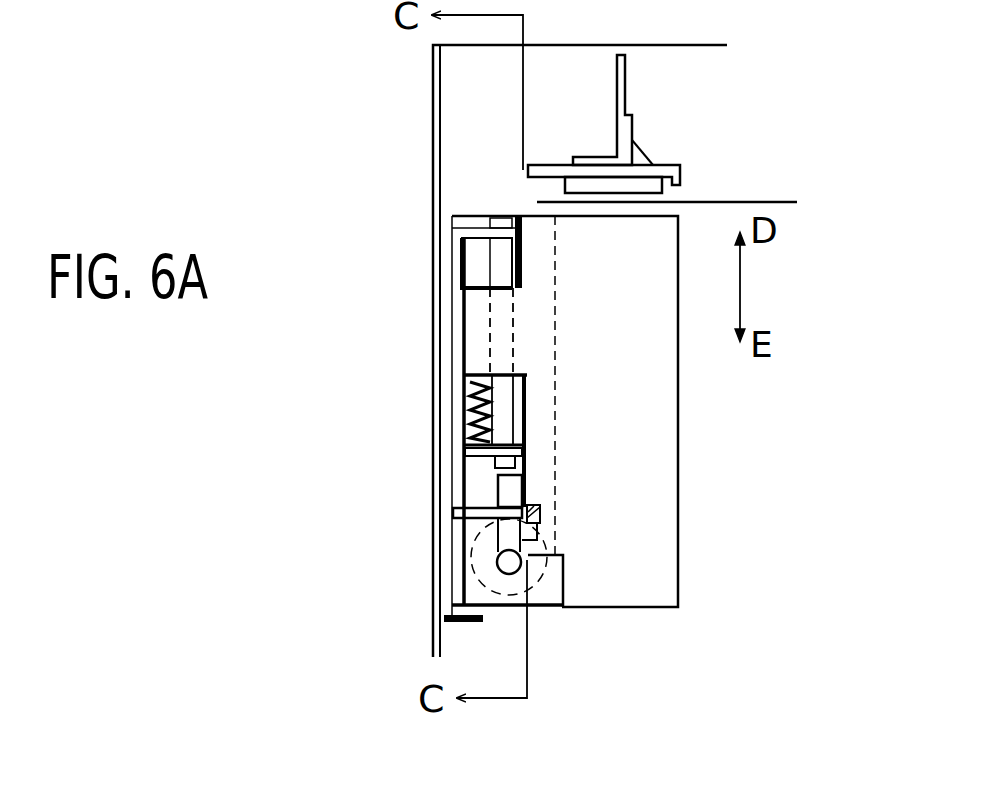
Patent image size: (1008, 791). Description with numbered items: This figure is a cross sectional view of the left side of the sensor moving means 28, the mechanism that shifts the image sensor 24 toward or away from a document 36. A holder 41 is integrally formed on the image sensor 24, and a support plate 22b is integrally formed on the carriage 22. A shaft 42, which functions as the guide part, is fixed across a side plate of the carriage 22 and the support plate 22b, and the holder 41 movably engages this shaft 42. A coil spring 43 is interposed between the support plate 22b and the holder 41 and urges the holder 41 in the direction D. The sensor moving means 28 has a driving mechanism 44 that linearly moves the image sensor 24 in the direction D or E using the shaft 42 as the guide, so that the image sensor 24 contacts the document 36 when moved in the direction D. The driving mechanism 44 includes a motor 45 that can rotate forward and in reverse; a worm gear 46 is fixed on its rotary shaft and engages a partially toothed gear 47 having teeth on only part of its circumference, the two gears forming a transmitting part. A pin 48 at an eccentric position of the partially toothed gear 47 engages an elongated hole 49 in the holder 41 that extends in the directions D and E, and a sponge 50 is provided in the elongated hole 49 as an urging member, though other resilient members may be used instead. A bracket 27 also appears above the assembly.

The carriage 22 is at (543, 612).
The support plate 22b is at (482, 455).
The image sensor 24 is at (690, 583).
The bracket 27 is at (655, 175).
The sensor moving means 28 is at (487, 487).
The document 36 is at (770, 197).
The holder 41 is at (483, 332).
The shaft 42 is at (492, 255).
The coil spring 43 is at (480, 413).
The driving mechanism 44 is at (477, 530).
The motor 45 is at (558, 610).
The worm gear 46 is at (500, 553).
The partially toothed gear 47 is at (520, 487).
The pin 48 is at (558, 555).
The elongated hole 49 is at (537, 520).
The sponge 50 is at (530, 512).